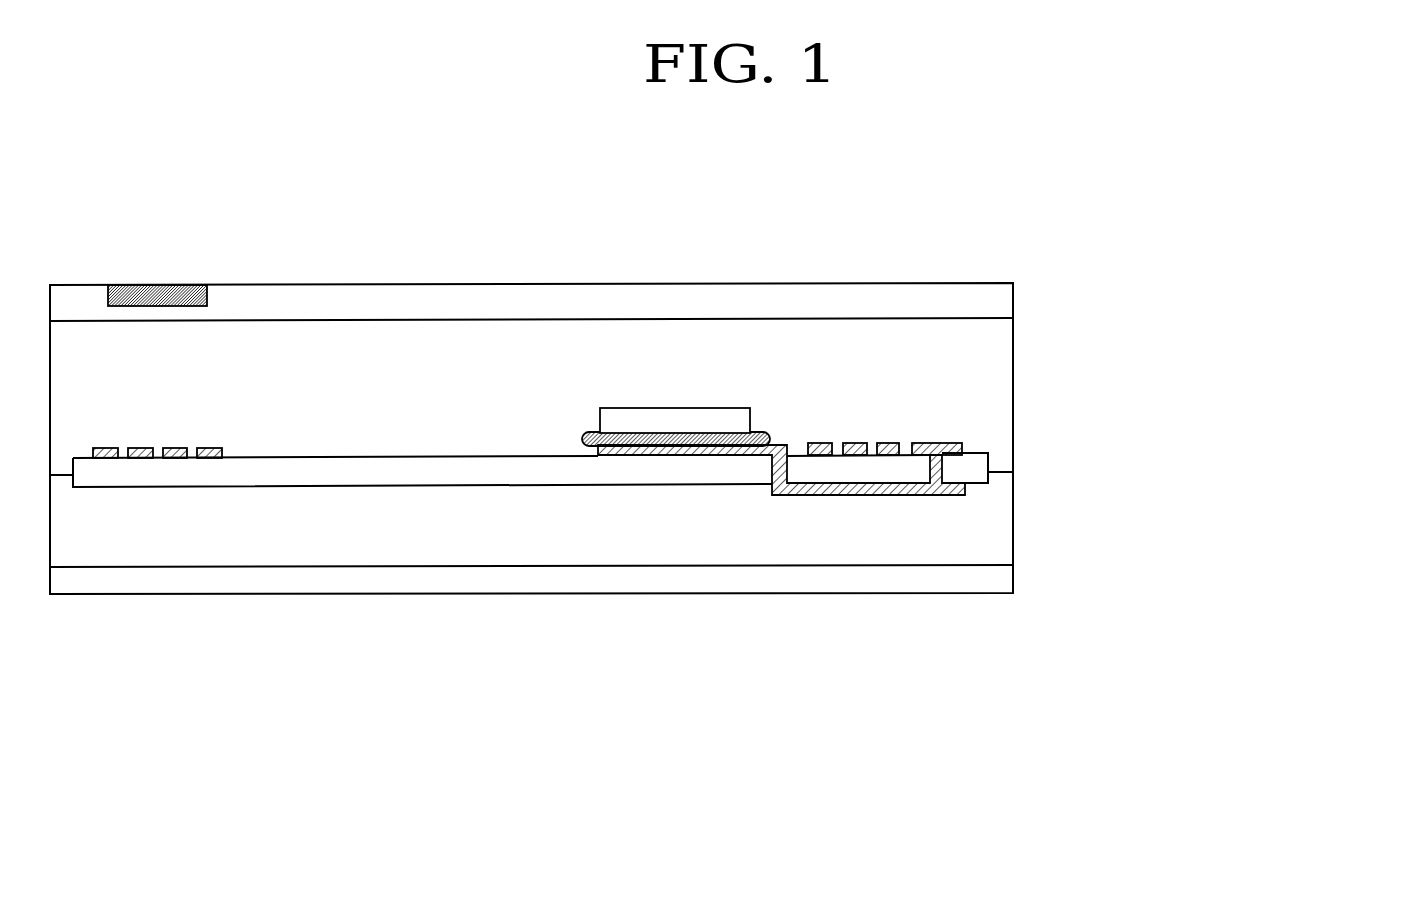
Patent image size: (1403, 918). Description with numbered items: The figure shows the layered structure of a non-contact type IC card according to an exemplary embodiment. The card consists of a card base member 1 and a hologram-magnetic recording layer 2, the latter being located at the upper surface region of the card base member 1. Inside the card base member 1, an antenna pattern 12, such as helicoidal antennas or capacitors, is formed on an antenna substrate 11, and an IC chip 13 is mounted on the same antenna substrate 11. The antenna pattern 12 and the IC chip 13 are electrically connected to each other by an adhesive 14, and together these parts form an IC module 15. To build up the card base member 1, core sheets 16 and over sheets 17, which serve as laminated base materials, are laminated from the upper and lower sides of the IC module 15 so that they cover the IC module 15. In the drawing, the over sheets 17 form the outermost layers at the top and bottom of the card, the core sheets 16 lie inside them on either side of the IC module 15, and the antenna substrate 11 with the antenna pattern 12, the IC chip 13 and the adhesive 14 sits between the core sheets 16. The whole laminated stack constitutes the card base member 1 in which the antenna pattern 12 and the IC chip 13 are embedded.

The card base member 1 is at (1237, 583).
The hologram-magnetic recording layer 2 is at (155, 285).
The antenna substrate 11 is at (322, 487).
The antenna pattern 12 is at (242, 385).
The IC chip 13 is at (673, 408).
The adhesive 14 is at (590, 437).
The IC module 15 is at (510, 462).
The core sheet 16 is at (1073, 387).
The over sheet 17 is at (1070, 290).